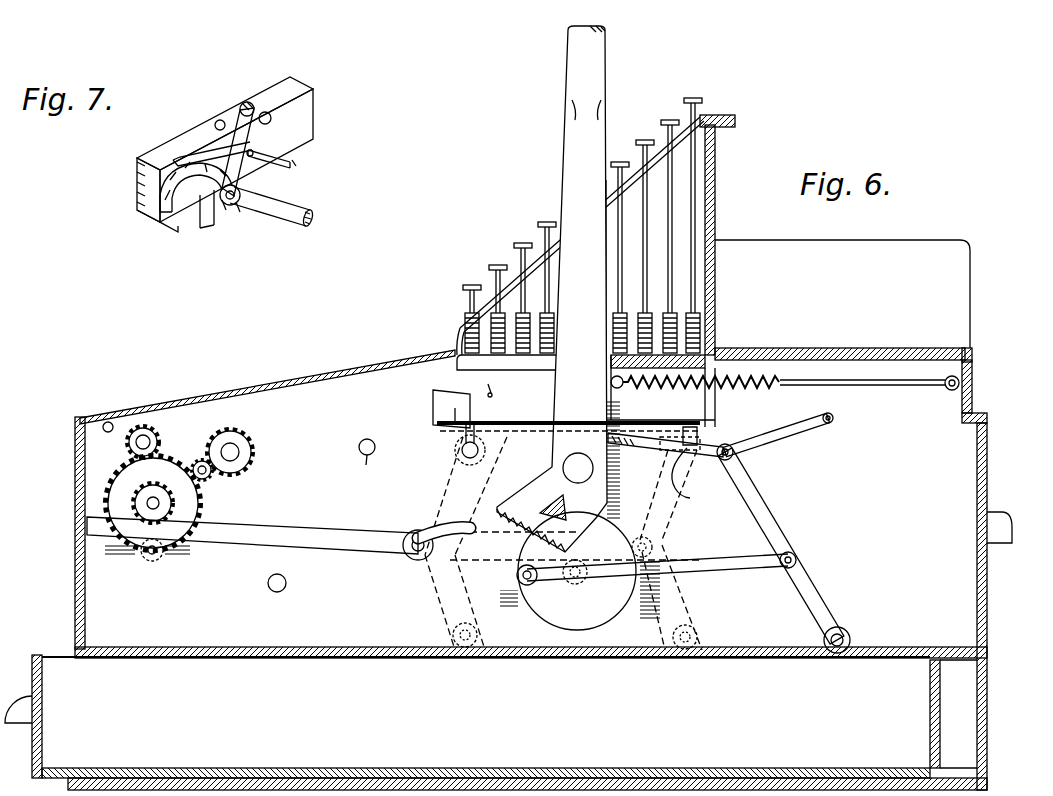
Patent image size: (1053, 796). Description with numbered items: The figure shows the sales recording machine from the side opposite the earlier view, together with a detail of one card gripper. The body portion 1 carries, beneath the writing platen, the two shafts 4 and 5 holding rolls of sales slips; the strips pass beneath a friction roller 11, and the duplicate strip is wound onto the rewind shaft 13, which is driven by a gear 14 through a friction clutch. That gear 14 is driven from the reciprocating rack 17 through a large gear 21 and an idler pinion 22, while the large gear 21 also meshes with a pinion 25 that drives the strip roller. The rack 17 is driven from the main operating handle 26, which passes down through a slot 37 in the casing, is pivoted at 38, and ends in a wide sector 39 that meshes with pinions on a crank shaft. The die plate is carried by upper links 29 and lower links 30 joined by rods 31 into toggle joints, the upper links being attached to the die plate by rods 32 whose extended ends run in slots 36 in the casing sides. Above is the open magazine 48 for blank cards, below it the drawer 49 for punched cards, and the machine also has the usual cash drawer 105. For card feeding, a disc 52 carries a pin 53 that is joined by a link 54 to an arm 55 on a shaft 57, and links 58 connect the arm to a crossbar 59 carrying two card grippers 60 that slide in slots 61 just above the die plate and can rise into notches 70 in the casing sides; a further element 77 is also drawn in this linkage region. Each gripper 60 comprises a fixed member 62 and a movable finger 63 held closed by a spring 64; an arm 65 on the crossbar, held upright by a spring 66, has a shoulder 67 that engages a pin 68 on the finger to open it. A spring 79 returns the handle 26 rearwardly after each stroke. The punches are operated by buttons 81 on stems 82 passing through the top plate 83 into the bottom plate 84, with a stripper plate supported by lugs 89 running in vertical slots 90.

In FIG. 6, the body portion 1 is at (985, 712).
In FIG. 6, the shaft 4 is at (274, 593).
In FIG. 6, the shaft 5 is at (366, 464).
In FIG. 6, the friction roller 11 is at (104, 423).
In FIG. 6, the rewind shaft 13 is at (236, 460).
In FIG. 6, the gear 14 is at (245, 437).
In FIG. 6, the reciprocating rack 17 is at (236, 540).
In FIG. 6, the large gear 21 is at (178, 506).
In FIG. 6, the idler pinion 22 is at (200, 460).
In FIG. 6, the pinion 25 is at (147, 428).
In FIG. 6, the main operating handle 26 is at (578, 65).
In FIG. 6, the upper links 29 is at (668, 516).
In FIG. 6, the lower links 30 is at (700, 633).
In FIG. 6, the rods 31 is at (404, 552).
In FIG. 6, the rods 32 is at (688, 487).
In FIG. 6, the slots 36 is at (418, 478).
In FIG. 6, the slot 37 is at (452, 338).
In FIG. 6, the pivot 38 is at (592, 468).
In FIG. 6, the sector 39 is at (507, 512).
In FIG. 6, the upper open magazine 48 is at (880, 262).
In FIG. 6, the drawer 49 is at (990, 589).
In FIG. 6, the disc 52 is at (566, 620).
In FIG. 6, the pin 53 is at (521, 585).
In FIG. 6, the link 54 is at (700, 570).
In FIG. 6, the arm 55 is at (780, 522).
In FIG. 6, the shaft 57 is at (848, 632).
In FIG. 6, the links 58 is at (513, 432).
In FIG. 6, the crossbar 59 is at (462, 448).
In FIG. 7, the crossbar 59 is at (316, 218).
In FIG. 7, the card gripper 60 is at (300, 116).
In FIG. 6, the slots 61 is at (548, 425).
In FIG. 7, the fixed member 62 is at (180, 228).
In FIG. 7, the movable finger 63 is at (170, 196).
In FIG. 7, the spring 64 is at (210, 165).
In FIG. 7, the arm 65 is at (243, 118).
In FIG. 7, the spring 66 is at (292, 166).
In FIG. 7, the shoulder 67 is at (232, 205).
In FIG. 7, the pin 68 is at (205, 225).
In FIG. 6, the notches 70 is at (447, 402).
In FIG. 6, the link 77 is at (775, 438).
In FIG. 6, the spring 79 is at (820, 386).
In FIG. 6, the buttons 81 is at (548, 222).
In FIG. 6, the stems 82 is at (470, 298).
In FIG. 6, the top plate 83 is at (627, 165).
In FIG. 6, the bottom plate 84 is at (456, 362).
In FIG. 6, the lugs 89 is at (680, 395).
In FIG. 6, the vertical slots 90 is at (502, 382).
In FIG. 6, the cash drawer 105 is at (491, 716).